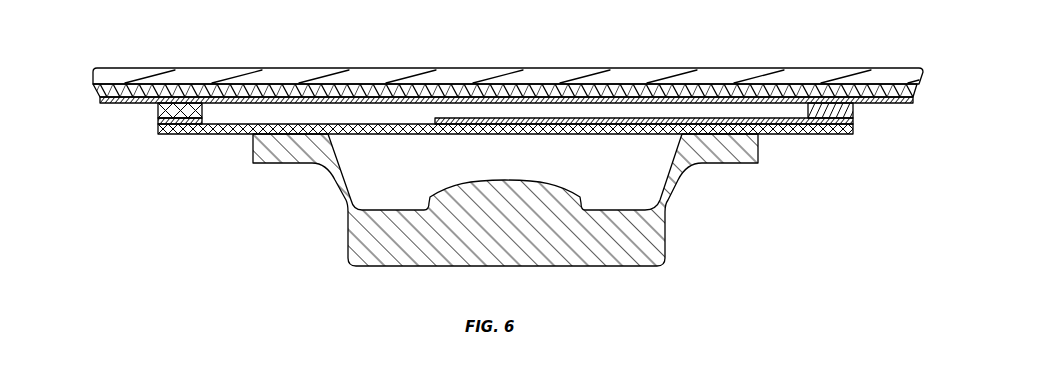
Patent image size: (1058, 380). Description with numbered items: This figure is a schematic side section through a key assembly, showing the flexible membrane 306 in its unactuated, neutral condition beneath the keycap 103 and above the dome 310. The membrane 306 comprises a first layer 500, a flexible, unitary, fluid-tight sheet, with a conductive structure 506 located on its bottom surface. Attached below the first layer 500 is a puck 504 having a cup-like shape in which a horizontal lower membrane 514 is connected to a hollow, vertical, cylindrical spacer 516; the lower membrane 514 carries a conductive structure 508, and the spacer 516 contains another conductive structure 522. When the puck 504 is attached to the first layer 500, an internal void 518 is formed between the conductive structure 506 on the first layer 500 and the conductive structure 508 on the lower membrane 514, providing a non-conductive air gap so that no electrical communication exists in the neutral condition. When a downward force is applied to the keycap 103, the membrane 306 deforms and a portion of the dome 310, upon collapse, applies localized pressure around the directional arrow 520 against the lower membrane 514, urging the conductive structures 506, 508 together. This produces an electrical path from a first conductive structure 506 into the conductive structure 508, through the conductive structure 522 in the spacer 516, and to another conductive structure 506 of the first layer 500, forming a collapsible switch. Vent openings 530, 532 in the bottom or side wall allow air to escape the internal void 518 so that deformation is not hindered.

The keycap 103 is at (537, 80).
The flexible membrane 306 is at (92, 86).
The dome 310 is at (657, 242).
The first layer 500 is at (917, 92).
The puck 504 is at (803, 135).
The conductive structure 506 is at (140, 103).
The conductive structure 508 is at (636, 124).
The lower membrane 514 is at (217, 135).
The spacer 516 is at (163, 110).
The internal void 518 is at (363, 114).
The directional arrow 520 is at (505, 139).
The conductive structure 522 is at (835, 105).
The vent opening 530 is at (247, 135).
The vent opening 532 is at (178, 122).